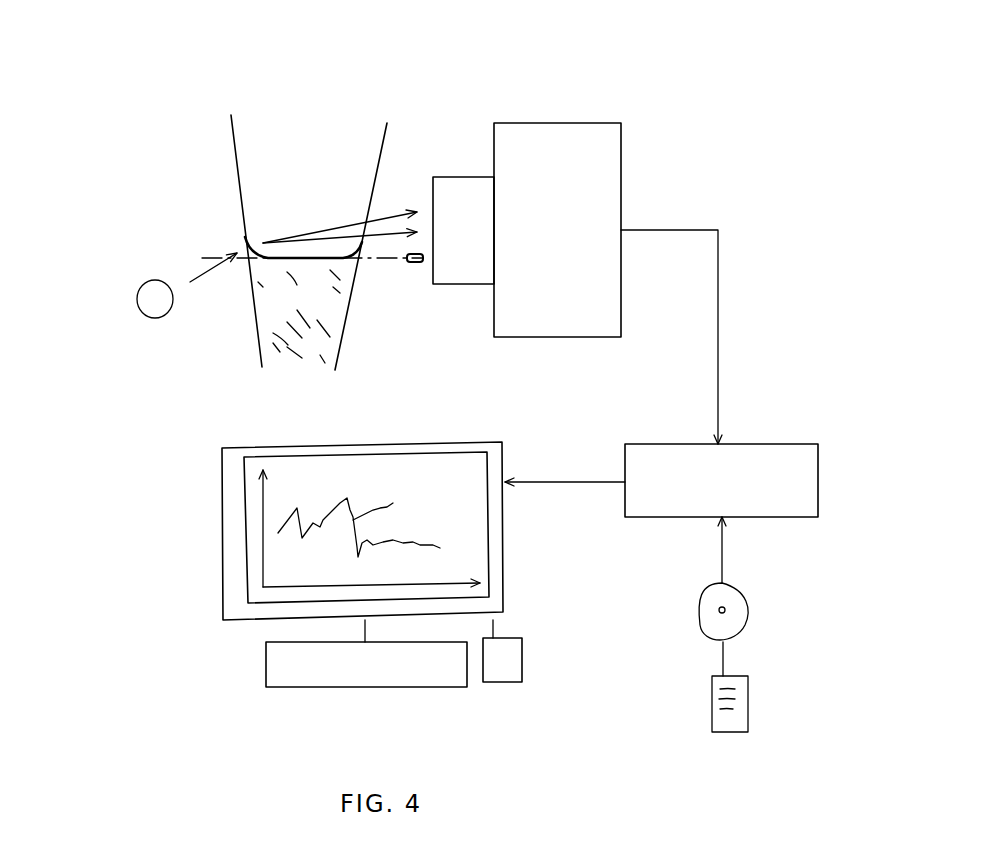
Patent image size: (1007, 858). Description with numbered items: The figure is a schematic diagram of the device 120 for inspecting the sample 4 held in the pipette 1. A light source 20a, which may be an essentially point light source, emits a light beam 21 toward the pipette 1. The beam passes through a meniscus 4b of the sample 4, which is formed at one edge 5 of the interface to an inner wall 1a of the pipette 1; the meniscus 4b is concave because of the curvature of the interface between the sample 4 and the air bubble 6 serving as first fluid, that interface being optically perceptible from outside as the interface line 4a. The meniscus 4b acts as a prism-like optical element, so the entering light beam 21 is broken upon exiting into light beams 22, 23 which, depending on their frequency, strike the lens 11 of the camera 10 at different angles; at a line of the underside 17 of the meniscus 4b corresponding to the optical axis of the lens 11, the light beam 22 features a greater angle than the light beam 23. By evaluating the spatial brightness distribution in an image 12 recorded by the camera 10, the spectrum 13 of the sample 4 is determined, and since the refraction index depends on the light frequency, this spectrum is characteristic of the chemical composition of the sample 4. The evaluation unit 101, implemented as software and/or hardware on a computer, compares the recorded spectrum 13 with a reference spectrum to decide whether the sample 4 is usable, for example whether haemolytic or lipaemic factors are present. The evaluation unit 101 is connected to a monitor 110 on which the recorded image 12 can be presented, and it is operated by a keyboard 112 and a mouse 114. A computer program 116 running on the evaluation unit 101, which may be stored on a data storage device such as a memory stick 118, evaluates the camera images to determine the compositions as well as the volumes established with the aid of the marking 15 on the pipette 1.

The pipette 1 is at (277, 125).
The inner wall 1a is at (250, 226).
The sample 4 is at (318, 345).
The interface line 4a is at (313, 262).
The meniscus 4b is at (262, 265).
The edge 5 is at (242, 240).
The air bubble 6 is at (240, 130).
The camera 10 is at (582, 105).
The lens 11 is at (460, 183).
The image 12 is at (490, 542).
The spectrum 13 is at (385, 509).
The marking 15 is at (413, 265).
The underside 17 is at (395, 265).
The light source 20a is at (148, 300).
The light beam 21 is at (215, 282).
The light beam 22 is at (345, 225).
The light beam 23 is at (315, 245).
The evaluation unit 101 is at (652, 520).
The monitor 110 is at (220, 498).
The keyboard 112 is at (343, 677).
The mouse 114 is at (507, 675).
The computer program 116 is at (752, 610).
The memory stick 118 is at (748, 703).
The device 120 is at (750, 188).